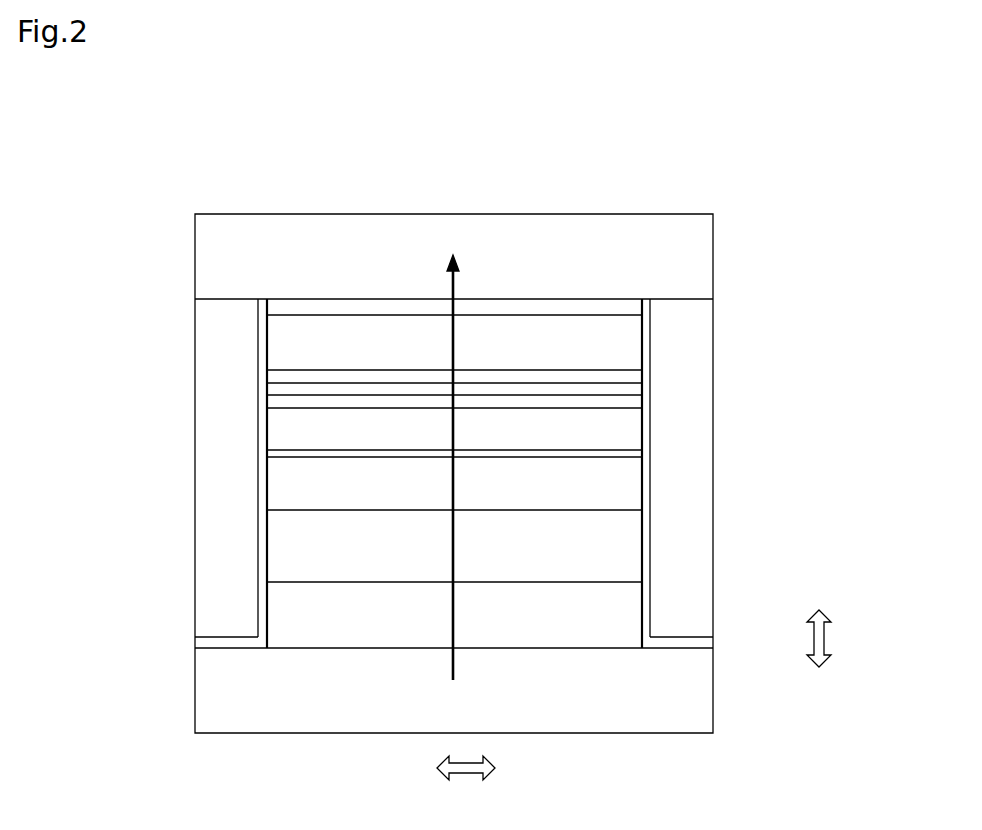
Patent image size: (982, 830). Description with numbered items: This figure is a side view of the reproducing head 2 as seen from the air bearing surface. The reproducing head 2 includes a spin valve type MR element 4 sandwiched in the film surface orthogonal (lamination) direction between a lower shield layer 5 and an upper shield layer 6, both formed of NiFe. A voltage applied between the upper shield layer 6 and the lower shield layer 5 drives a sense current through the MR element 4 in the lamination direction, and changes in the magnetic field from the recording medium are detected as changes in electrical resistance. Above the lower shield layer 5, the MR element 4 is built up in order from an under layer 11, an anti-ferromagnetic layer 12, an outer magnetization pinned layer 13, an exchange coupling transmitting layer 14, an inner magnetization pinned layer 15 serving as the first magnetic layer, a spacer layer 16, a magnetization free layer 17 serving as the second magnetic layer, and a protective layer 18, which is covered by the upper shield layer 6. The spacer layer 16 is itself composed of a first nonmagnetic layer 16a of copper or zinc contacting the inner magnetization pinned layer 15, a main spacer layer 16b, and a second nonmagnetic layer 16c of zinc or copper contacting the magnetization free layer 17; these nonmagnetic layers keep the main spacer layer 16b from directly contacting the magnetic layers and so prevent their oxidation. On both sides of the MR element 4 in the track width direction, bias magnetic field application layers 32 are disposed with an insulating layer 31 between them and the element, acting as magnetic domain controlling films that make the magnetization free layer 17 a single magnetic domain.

The reproducing head 2 is at (470, 185).
The MR element 4 is at (580, 470).
The lower shield layer 5 is at (695, 676).
The upper shield layer 6 is at (693, 260).
The under layer 11 is at (526, 622).
The anti-ferromagnetic layer 12 is at (630, 548).
The outer magnetization pinned layer 13 is at (630, 483).
The exchange coupling transmitting layer 14 is at (630, 455).
The inner magnetization pinned layer 15 is at (630, 432).
The spacer layer 16 is at (555, 381).
The first nonmagnetic layer 16a is at (630, 403).
The main spacer layer 16b is at (630, 386).
The second nonmagnetic layer 16c is at (630, 373).
The magnetization free layer 17 is at (630, 347).
The protective layer 18 is at (630, 307).
The insulating layer 31 is at (203, 643).
The bias magnetic field application layers 32 is at (200, 521).